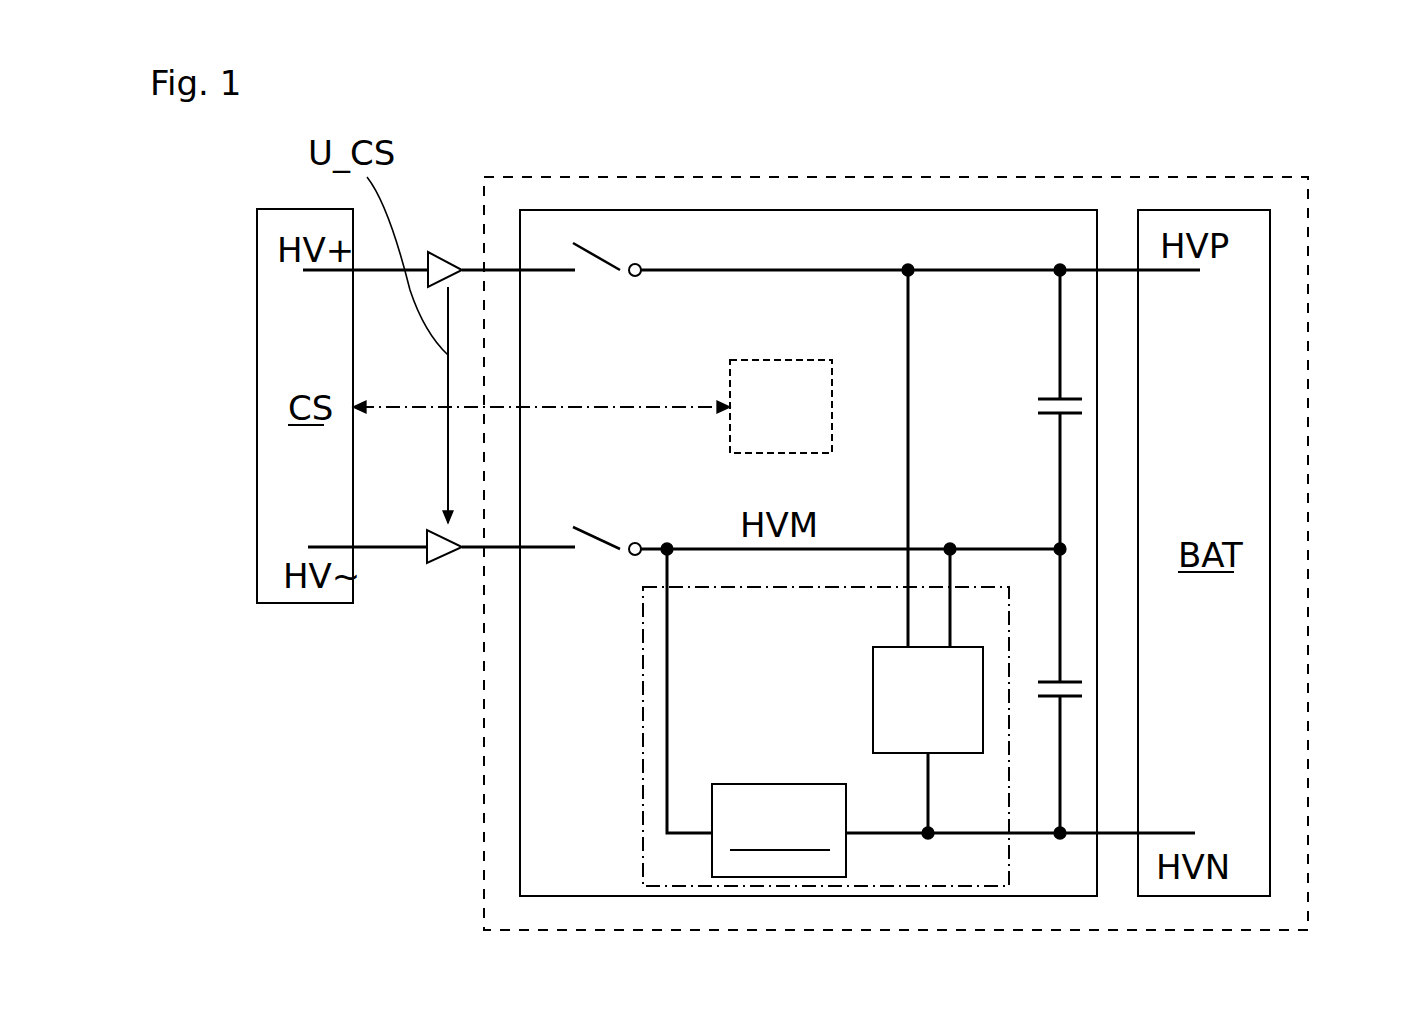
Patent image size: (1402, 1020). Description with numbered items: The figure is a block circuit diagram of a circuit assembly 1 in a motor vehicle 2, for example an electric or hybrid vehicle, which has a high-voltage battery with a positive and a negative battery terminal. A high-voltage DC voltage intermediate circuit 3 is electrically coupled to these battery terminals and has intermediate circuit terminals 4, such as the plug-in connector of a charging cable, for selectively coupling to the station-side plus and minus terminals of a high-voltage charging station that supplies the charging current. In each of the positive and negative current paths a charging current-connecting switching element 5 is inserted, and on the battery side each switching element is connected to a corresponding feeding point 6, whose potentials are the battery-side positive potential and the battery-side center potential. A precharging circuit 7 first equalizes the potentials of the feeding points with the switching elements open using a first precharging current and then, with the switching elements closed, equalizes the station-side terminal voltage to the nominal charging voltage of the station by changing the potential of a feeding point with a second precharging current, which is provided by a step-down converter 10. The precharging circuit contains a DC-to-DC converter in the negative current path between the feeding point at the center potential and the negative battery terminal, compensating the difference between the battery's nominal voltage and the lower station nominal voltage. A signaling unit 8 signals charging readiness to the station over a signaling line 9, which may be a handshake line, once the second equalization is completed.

The circuit assembly 1 is at (350, 775).
The vehicle 2 is at (1309, 487).
The high-voltage DC voltage intermediate circuit 3 is at (897, 208).
The intermediate circuit terminals 4 is at (442, 250).
The charging current-connecting switching elements 5 is at (597, 258).
The feeding points 6 is at (640, 277).
The precharging circuit 7 is at (643, 812).
The signaling unit 8 is at (792, 425).
The signaling line 9 is at (615, 408).
The step-down converter 10 is at (950, 721).